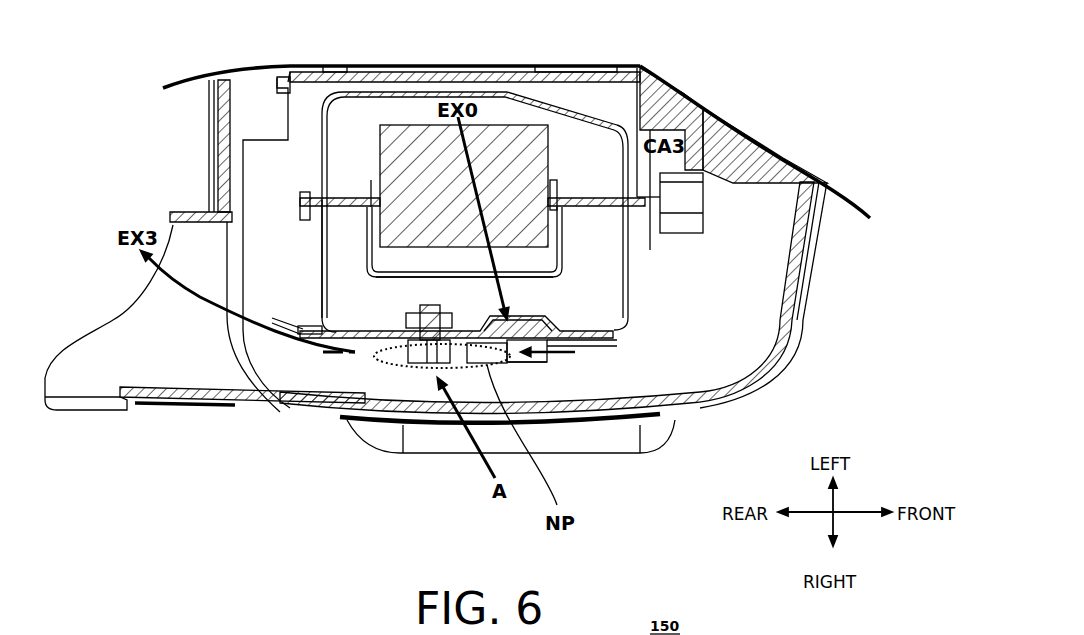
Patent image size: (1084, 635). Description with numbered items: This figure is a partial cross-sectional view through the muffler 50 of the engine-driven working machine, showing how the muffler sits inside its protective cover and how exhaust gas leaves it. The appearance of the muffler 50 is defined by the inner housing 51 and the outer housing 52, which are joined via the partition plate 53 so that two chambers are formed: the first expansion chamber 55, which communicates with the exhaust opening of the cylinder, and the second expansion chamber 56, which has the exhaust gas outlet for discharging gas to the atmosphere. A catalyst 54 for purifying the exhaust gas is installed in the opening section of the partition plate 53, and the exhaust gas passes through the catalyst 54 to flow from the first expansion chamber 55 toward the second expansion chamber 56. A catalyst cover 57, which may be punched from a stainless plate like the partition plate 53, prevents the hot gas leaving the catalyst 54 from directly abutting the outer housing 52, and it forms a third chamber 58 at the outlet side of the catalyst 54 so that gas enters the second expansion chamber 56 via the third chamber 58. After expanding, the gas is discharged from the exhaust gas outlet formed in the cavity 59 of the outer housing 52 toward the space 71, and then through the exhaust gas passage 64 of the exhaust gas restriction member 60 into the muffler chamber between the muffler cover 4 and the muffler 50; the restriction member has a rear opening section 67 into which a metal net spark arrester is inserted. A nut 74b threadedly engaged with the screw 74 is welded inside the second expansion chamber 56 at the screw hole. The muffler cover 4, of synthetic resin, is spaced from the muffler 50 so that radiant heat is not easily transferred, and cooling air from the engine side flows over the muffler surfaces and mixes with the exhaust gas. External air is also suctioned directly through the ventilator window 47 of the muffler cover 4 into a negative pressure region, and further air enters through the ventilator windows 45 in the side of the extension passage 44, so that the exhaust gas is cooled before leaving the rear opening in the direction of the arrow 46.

The muffler cover 4 is at (722, 408).
The extension passage 44 is at (87, 353).
The ventilator windows 45 is at (170, 403).
The arrow 46 is at (70, 412).
The ventilator windows 47 is at (437, 420).
The muffler 50 is at (311, 150).
The inner housing 51 is at (328, 103).
The outer housing 52 is at (322, 280).
The partition plate 53 is at (593, 203).
The catalyst 54 is at (410, 137).
The first expansion chamber 55 is at (507, 110).
The second expansion chamber 56 is at (606, 228).
The catalyst cover 57 is at (367, 247).
The third chamber 58 is at (547, 261).
The cavity 59 is at (533, 313).
The exhaust gas restriction member 60 is at (580, 340).
The exhaust gas passage 64 is at (537, 362).
The opening section 67 is at (330, 335).
The space 71 is at (613, 330).
The screw 74 is at (417, 357).
The nut 74b is at (410, 315).